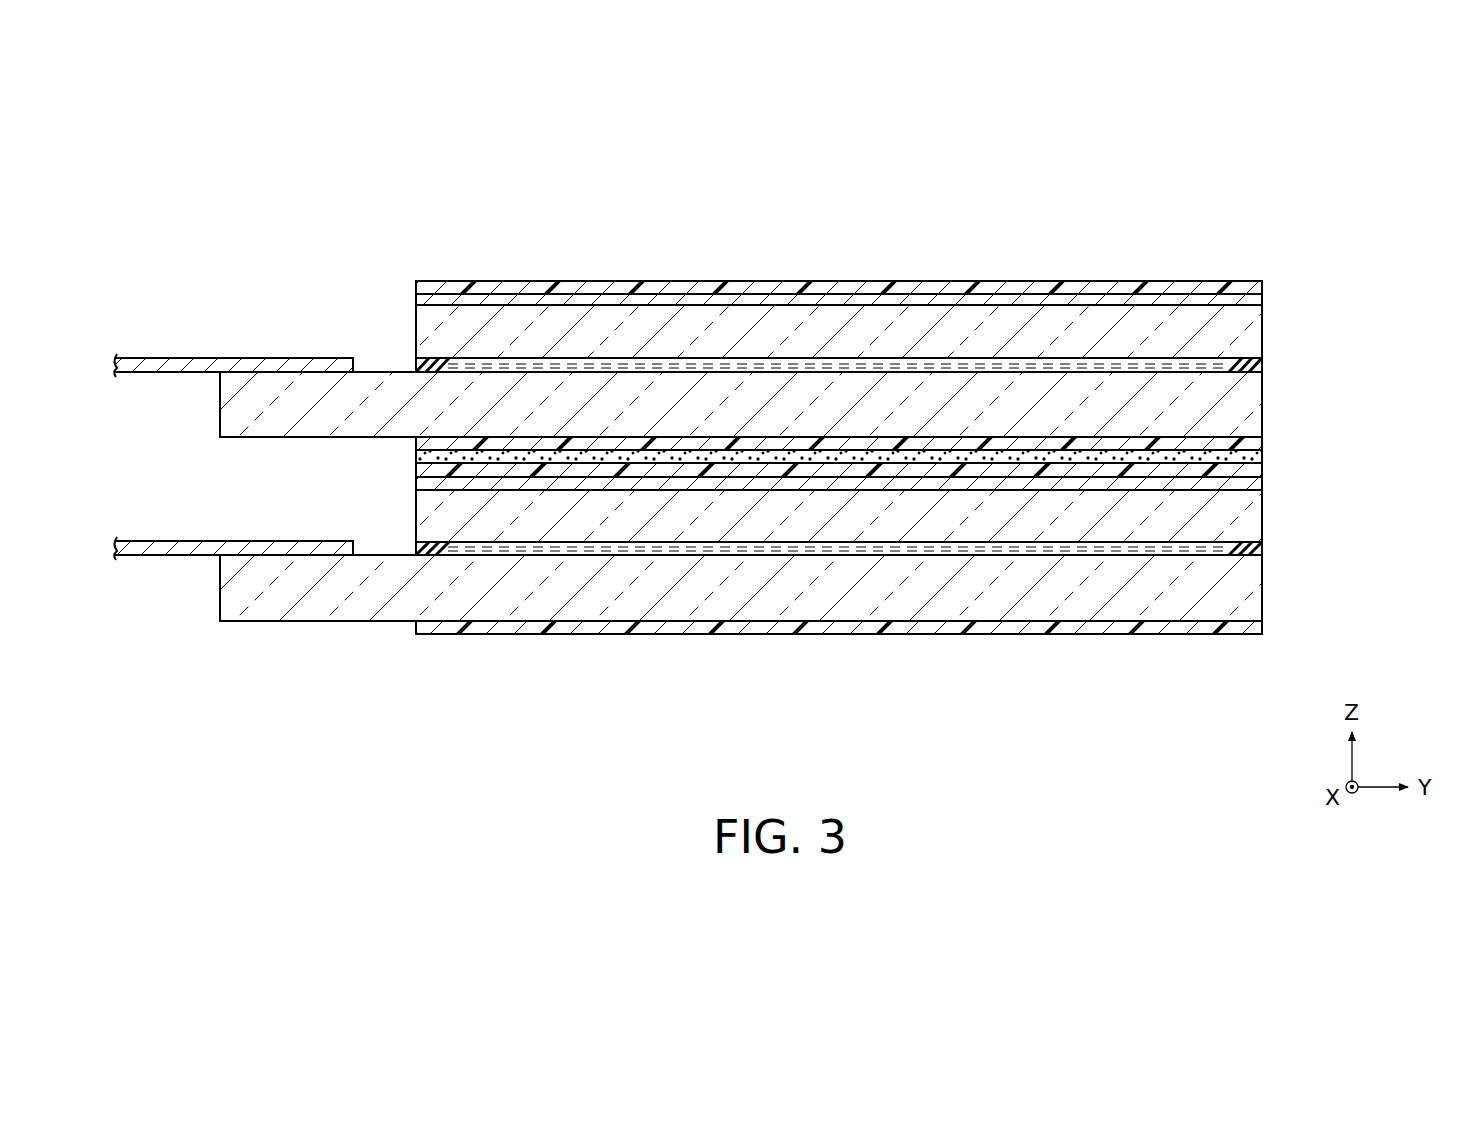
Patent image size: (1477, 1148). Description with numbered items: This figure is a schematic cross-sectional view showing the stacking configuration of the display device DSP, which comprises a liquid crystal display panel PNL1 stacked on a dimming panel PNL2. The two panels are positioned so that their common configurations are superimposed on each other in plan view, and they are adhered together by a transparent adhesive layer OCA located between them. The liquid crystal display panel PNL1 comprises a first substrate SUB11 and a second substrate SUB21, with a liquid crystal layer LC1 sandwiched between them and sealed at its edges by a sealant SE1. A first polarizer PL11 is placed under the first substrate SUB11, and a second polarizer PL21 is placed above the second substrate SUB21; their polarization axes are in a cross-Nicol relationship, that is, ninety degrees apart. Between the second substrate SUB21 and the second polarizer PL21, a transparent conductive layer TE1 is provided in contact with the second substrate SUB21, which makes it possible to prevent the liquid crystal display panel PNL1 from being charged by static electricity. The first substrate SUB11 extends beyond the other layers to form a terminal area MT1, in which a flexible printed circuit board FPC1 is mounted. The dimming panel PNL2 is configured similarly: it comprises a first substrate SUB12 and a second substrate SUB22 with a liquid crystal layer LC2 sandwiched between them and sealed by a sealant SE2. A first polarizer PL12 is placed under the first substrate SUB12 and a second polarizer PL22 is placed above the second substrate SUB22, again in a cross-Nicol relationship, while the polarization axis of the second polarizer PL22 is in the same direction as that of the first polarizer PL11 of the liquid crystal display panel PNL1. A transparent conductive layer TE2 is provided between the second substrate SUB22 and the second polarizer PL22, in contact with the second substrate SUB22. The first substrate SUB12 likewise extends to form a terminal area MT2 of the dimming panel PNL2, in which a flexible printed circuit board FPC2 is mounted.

The display device DSP is at (1232, 224).
The liquid crystal display panel PNL1 is at (839, 329).
The dimming panel PNL2 is at (839, 461).
The second polarizer PL21 is at (1264, 289).
The transparent conductive layer TE2 is at (800, 299).
The second substrate SUB21 is at (1250, 323).
The liquid crystal layer LC1 is at (966, 361).
The sealant SE1 is at (1262, 366).
The first substrate SUB11 is at (1250, 404).
The first polarizer PL11 is at (1252, 445).
The transparent adhesive layer OCA is at (1256, 456).
The second polarizer PL22 is at (1256, 470).
The transparent conductive layer TE1 is at (676, 489).
The second substrate SUB22 is at (1252, 511).
The liquid crystal layer LC2 is at (977, 550).
The sealant SE2 is at (1264, 548).
The first substrate SUB12 is at (1252, 586).
The first polarizer PL12 is at (1264, 627).
The flexible printed circuit board FPC1 is at (141, 356).
The flexible printed circuit board FPC2 is at (141, 539).
The terminal area MT1 is at (383, 367).
The terminal area MT2 is at (383, 550).